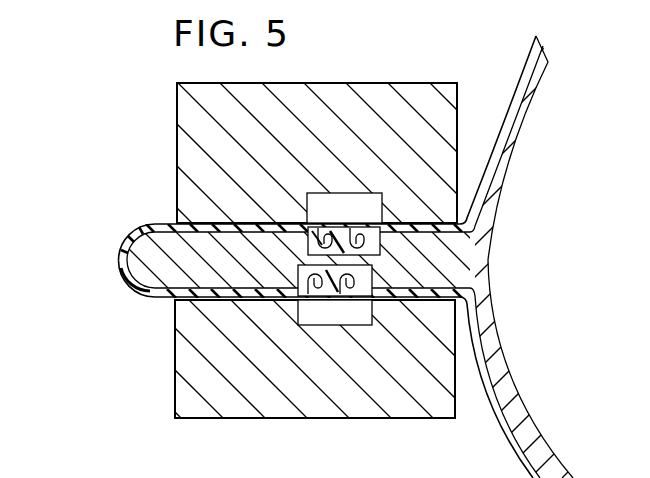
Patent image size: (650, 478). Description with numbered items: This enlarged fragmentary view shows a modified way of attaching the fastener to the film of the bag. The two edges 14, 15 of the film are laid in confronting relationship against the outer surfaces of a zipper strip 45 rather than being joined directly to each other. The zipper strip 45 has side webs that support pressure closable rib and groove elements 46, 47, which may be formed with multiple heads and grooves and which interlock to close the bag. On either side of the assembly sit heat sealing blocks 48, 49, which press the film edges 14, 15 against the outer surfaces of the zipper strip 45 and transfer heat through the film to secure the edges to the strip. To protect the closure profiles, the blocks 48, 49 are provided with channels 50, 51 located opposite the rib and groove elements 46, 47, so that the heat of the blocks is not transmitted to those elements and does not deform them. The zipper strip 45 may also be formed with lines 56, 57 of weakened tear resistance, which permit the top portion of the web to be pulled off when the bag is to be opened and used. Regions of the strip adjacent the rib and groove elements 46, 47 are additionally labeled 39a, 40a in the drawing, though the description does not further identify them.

The film edge 14 is at (250, 222).
The film edge 15 is at (271, 298).
The upper conductor 39a is at (308, 245).
The lower conductor 40a is at (300, 276).
The zipper strip 45 is at (112, 266).
The rib and groove element 46 is at (340, 245).
The rib and groove element 47 is at (340, 284).
The heat sealing block 48 is at (190, 172).
The heat sealing block 49 is at (188, 348).
The channel 50 is at (368, 197).
The channel 51 is at (363, 323).
The line of weakened tear resistance 56 is at (168, 224).
The line of weakened tear resistance 57 is at (166, 292).